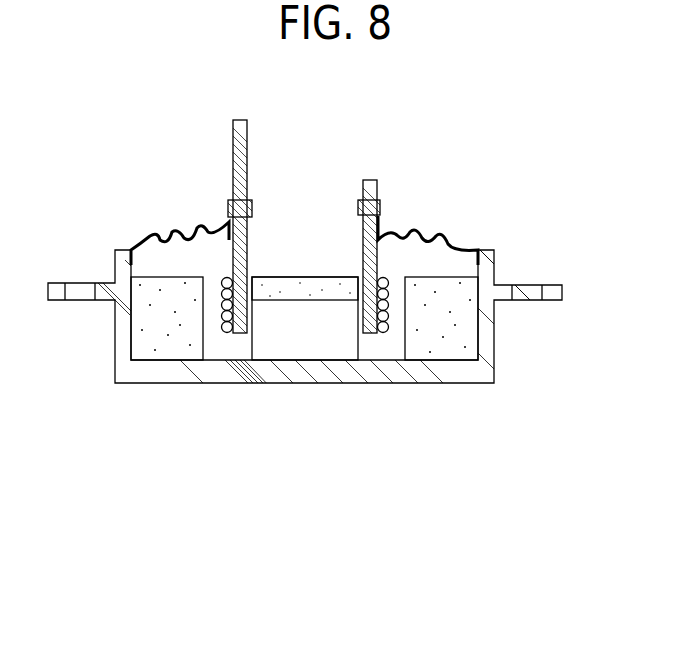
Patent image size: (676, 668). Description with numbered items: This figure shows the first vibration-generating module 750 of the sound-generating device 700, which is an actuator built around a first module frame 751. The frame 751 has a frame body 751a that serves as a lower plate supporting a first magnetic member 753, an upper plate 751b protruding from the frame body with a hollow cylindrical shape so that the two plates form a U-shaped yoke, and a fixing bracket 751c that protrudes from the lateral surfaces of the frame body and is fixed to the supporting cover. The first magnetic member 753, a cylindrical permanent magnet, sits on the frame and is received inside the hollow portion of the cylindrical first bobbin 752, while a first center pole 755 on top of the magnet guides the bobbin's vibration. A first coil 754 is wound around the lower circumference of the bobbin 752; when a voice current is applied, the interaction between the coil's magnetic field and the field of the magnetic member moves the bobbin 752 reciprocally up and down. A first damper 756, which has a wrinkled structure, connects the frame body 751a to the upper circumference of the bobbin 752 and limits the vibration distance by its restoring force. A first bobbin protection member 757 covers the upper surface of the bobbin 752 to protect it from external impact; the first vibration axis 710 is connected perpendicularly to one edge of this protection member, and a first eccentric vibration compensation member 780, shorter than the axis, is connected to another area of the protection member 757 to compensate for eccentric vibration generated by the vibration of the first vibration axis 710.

The sound-generating device 700 is at (78, 151).
The first vibration axis 710 is at (233, 150).
The first eccentric vibration compensation member 780 is at (377, 185).
The first bobbin protection member 757 is at (228, 206).
The first damper 756 is at (172, 229).
The first vibration-generating module 750 is at (106, 390).
The first module frame 751 is at (552, 470).
The frame body 751a is at (448, 383).
The upper plate 751b is at (465, 323).
The fixing bracket 751c is at (557, 300).
The first bobbin 752 is at (238, 333).
The first magnetic member 753 is at (285, 342).
The first coil 754 is at (383, 333).
The first center pole 755 is at (312, 288).